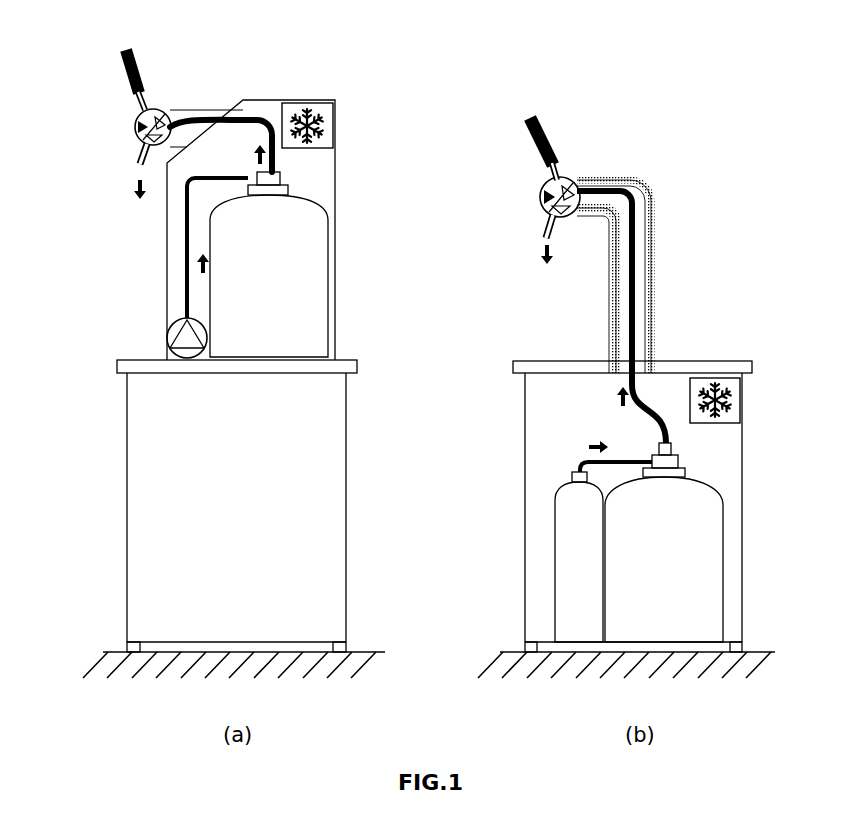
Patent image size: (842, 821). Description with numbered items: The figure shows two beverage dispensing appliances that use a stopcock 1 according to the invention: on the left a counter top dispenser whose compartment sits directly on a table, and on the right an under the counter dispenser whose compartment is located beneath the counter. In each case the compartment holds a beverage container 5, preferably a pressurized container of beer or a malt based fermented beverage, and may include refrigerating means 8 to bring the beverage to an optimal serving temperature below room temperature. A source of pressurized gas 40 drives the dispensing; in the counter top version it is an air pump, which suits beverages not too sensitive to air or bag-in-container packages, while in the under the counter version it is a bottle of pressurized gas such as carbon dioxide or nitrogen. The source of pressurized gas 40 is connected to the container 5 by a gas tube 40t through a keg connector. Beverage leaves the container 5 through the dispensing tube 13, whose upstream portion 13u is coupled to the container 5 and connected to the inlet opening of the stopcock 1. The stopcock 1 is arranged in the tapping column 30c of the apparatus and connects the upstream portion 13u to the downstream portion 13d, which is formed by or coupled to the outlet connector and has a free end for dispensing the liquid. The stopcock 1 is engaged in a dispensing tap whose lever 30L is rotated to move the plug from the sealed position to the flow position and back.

The stopcock 1 is at (135, 121).
The lever 30L is at (125, 66).
The upstream portion of the dispensing tube 13u is at (168, 108).
The downstream portion of the dispensing tube 13d is at (135, 148).
The tapping column 30c is at (200, 110).
The dispensing tube 13 is at (245, 118).
The refrigerating means 8 is at (308, 103).
The beverage container 5 is at (326, 240).
The gas tube 40t is at (185, 262).
The source of pressurized gas 40 is at (167, 340).